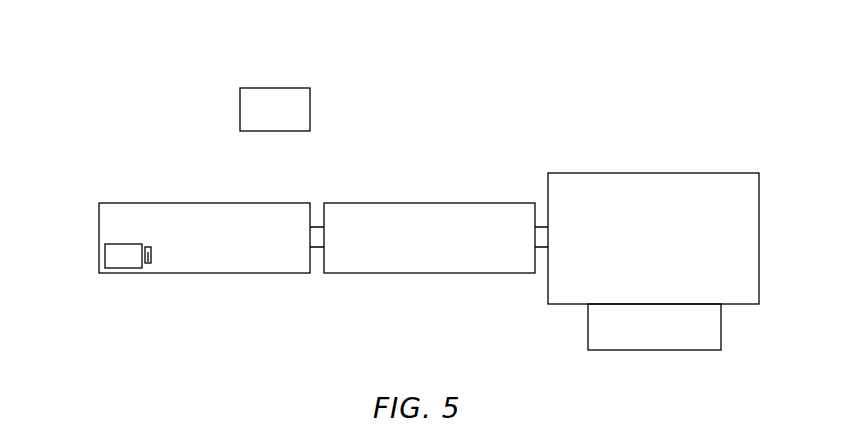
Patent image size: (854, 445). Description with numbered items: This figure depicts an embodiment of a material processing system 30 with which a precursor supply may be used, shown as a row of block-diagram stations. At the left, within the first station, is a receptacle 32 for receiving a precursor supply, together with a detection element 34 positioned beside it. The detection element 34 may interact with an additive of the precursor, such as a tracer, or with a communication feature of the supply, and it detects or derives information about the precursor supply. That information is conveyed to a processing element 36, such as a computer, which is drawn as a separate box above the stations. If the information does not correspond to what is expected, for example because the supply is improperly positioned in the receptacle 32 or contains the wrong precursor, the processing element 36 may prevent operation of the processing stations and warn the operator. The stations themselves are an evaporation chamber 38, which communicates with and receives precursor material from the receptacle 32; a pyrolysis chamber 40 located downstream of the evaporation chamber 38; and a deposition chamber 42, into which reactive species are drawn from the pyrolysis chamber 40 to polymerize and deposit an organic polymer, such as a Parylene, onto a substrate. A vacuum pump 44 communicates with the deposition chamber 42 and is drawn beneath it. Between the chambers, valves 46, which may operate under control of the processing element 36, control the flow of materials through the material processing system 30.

The material processing system 30 is at (111, 121).
The receptacle 32 is at (130, 260).
The detection element 34 is at (148, 263).
The processing element 36 is at (283, 118).
The evaporation chamber 38 is at (208, 212).
The pyrolysis chamber 40 is at (358, 213).
The deposition chamber 42 is at (598, 180).
The vacuum pump 44 is at (643, 340).
The valves 46 is at (318, 240).